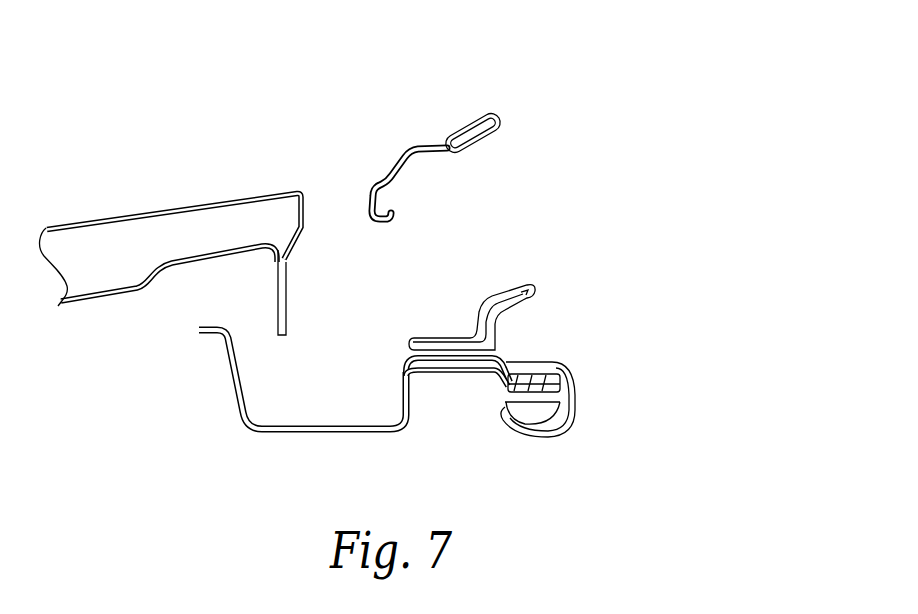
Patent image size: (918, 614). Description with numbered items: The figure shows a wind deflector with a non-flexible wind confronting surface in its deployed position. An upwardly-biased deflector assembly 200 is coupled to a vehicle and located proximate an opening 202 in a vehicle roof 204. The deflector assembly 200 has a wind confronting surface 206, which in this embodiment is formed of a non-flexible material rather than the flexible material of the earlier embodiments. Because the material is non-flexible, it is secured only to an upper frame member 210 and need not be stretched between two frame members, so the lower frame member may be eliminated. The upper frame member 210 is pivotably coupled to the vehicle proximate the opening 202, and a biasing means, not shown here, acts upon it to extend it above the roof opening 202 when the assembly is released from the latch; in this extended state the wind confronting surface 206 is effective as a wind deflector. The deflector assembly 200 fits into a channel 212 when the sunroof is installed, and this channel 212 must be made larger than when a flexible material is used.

The deflector assembly 200 is at (436, 112).
The opening 202 is at (313, 171).
The vehicle roof 204 is at (97, 223).
The wind confronting surface 206 is at (398, 168).
The upper frame member 210 is at (492, 112).
The channel 212 is at (338, 381).